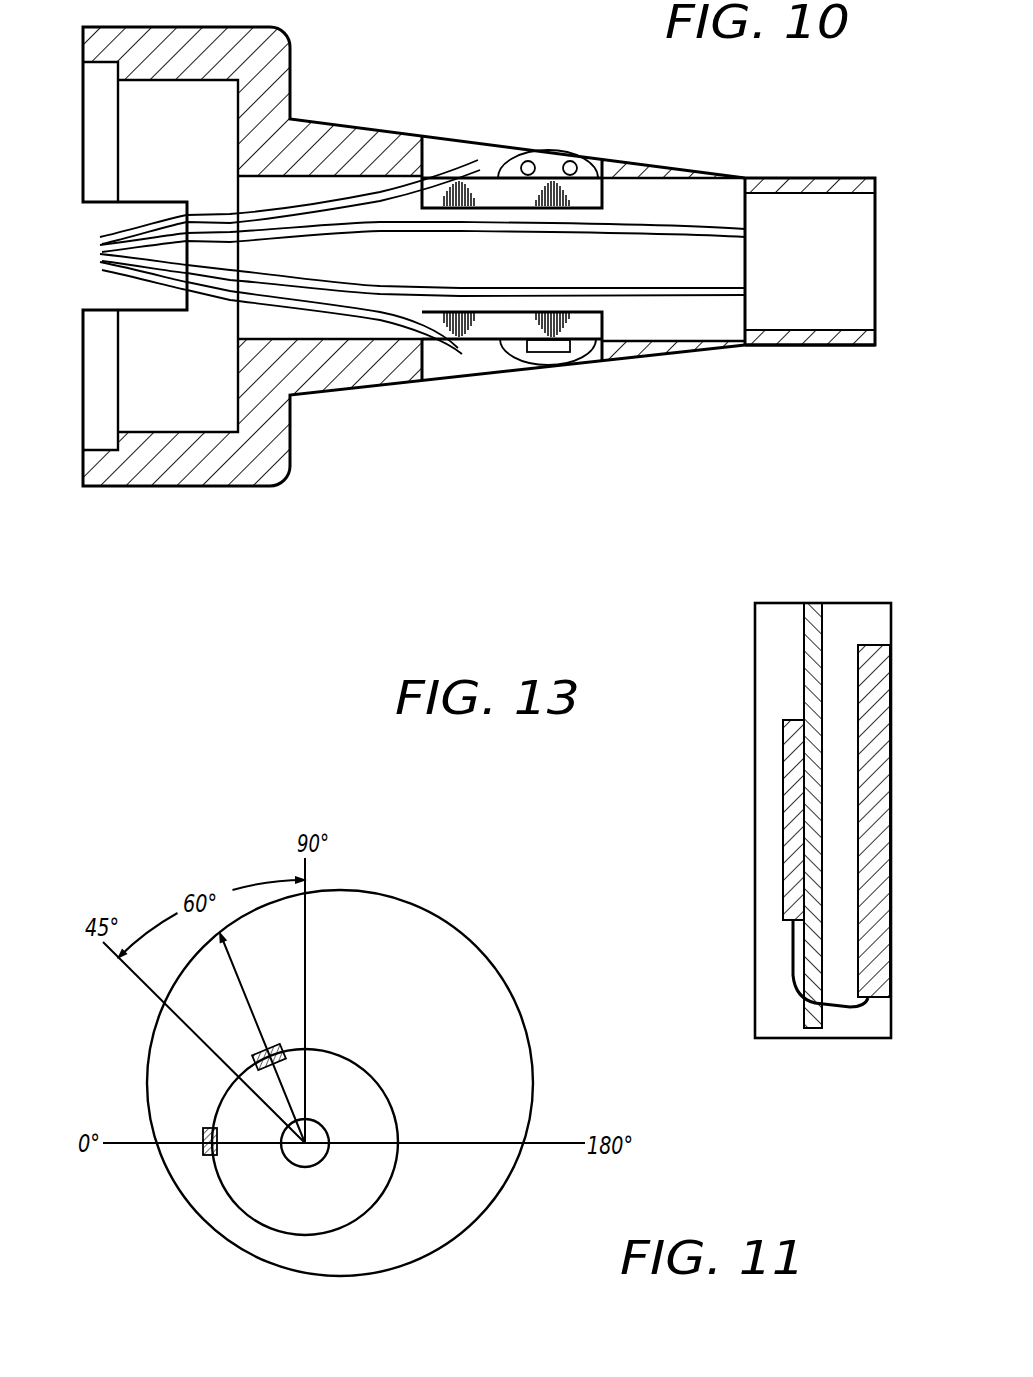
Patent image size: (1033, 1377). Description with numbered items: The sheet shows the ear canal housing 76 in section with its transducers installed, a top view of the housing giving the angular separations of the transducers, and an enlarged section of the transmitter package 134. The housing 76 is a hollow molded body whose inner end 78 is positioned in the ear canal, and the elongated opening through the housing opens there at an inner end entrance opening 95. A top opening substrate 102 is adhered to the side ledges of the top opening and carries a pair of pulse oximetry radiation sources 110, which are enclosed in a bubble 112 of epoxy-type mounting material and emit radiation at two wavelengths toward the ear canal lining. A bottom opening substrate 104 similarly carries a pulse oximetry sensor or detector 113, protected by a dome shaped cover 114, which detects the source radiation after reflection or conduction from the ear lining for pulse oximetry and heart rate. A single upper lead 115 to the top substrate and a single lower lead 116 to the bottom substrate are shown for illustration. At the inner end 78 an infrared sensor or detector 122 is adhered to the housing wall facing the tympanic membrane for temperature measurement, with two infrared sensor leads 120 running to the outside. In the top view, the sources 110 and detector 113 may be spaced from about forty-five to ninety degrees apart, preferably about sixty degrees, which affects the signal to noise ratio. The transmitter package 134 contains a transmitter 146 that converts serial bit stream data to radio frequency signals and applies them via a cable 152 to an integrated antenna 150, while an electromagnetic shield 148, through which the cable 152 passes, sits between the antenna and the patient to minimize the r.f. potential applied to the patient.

In FIG. 10, the housing 76 is at (441, 79).
In FIG. 10, the inner end 78 is at (877, 184).
In FIG. 10, the inner end entrance opening 95 is at (877, 335).
In FIG. 10, the top opening substrate 102 is at (577, 208).
In FIG. 10, the bottom opening substrate 104 is at (577, 312).
In FIG. 10, the pulse oximetry radiation sources 110 is at (537, 151).
In FIG. 13, the pulse oximetry radiation sources 110 is at (255, 1058).
In FIG. 10, the bubble 112 is at (510, 177).
In FIG. 10, the pulse oximetry sensor or detector 113 is at (547, 352).
In FIG. 13, the pulse oximetry sensor or detector 113 is at (204, 1152).
In FIG. 10, the dome shaped cover 114 is at (507, 355).
In FIG. 10, the upper lead 115 is at (387, 203).
In FIG. 10, the lower lead 116 is at (330, 307).
In FIG. 10, the infrared sensor leads 120 is at (712, 235).
In FIG. 10, the infrared sensor or detector 122 is at (818, 230).
In FIG. 11, the transmitter package 134 is at (753, 564).
In FIG. 11, the transmitter 146 is at (875, 645).
In FIG. 11, the electromagnetic shield 148 is at (803, 645).
In FIG. 11, the integrated antenna 150 is at (783, 762).
In FIG. 11, the cable 152 is at (793, 967).